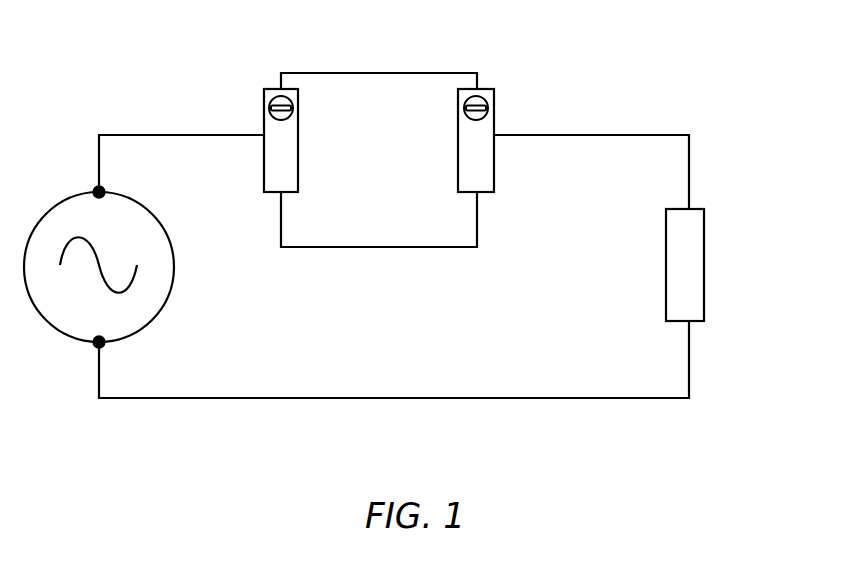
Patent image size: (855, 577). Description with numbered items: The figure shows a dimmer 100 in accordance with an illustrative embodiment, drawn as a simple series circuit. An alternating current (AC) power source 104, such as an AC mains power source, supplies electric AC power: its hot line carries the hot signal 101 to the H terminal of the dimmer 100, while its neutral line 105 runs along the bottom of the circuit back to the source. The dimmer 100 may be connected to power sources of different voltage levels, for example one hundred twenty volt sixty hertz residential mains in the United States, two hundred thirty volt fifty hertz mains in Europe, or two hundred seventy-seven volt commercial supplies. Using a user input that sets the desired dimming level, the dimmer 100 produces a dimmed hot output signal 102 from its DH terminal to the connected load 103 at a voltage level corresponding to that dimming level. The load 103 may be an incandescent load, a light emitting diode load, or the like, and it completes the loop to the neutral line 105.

The dimmer 100 is at (385, 72).
The hot signal 101 is at (160, 133).
The dimmed hot output signal 102 is at (600, 134).
The load 103 is at (704, 247).
The alternating current power source 104 is at (170, 290).
The neutral line 105 is at (238, 398).